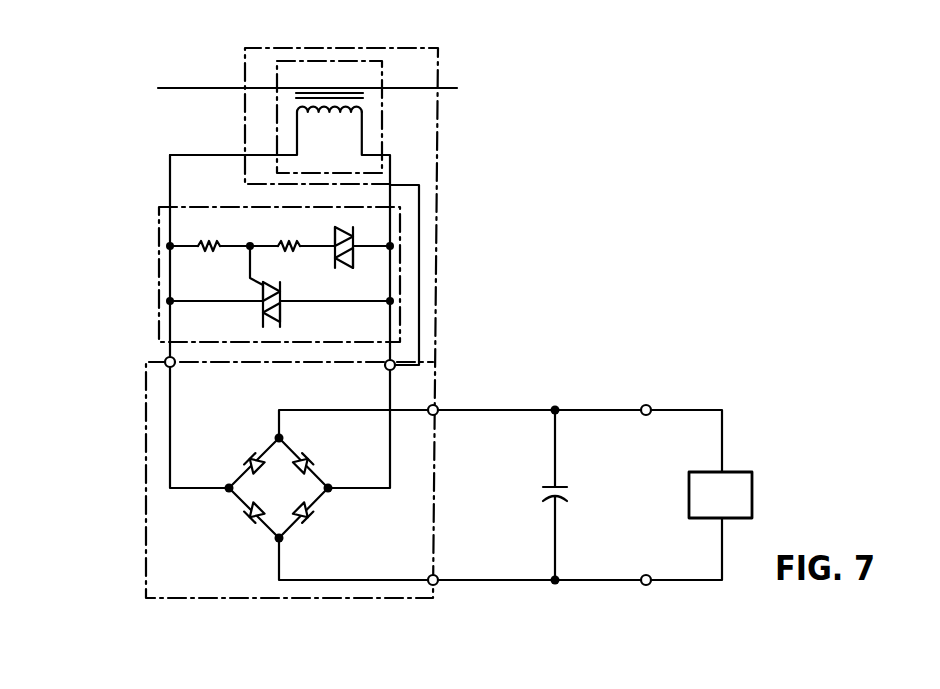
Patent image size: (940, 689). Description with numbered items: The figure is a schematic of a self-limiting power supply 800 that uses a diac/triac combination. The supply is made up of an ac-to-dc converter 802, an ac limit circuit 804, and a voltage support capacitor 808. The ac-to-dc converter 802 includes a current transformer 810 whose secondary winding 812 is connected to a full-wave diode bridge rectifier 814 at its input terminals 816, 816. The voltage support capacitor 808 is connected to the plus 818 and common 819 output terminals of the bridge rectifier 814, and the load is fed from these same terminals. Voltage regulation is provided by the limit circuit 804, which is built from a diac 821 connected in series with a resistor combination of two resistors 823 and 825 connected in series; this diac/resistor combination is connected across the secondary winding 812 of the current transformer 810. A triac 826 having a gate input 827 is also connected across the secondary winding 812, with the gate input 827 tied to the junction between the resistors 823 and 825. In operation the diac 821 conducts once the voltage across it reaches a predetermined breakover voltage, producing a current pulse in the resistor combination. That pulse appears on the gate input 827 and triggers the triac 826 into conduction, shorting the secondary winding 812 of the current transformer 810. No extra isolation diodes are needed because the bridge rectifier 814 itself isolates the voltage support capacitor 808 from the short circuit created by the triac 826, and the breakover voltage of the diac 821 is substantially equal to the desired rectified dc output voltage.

The power supply circuit 800 is at (538, 623).
The ac-to-dc converter 802 is at (439, 62).
The ac limit circuit 804 is at (159, 278).
The voltage support capacitor 808 is at (568, 495).
The current transformer 810 is at (383, 92).
The secondary winding 812 is at (328, 113).
The full-wave diode bridge rectifier 814 is at (294, 498).
The input terminals 816 is at (172, 368).
The plus output terminal 818 is at (437, 405).
The common output terminal 819 is at (437, 575).
The diac 821 is at (355, 262).
The resistor 823 is at (298, 240).
The resistor 825 is at (212, 240).
The triac 826 is at (284, 308).
The gate input 827 is at (248, 284).